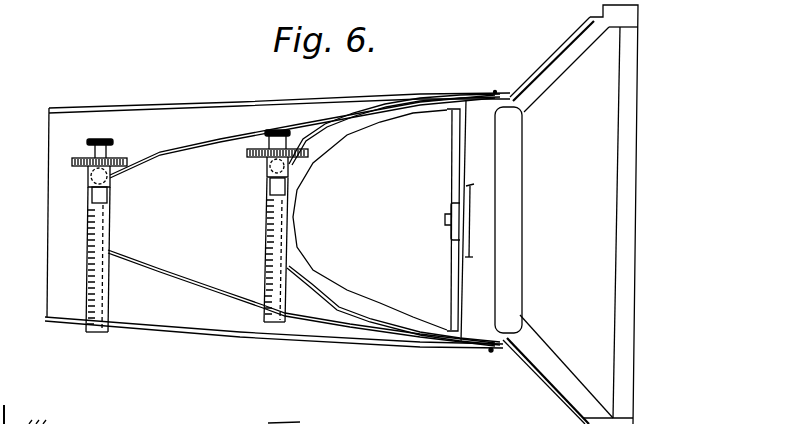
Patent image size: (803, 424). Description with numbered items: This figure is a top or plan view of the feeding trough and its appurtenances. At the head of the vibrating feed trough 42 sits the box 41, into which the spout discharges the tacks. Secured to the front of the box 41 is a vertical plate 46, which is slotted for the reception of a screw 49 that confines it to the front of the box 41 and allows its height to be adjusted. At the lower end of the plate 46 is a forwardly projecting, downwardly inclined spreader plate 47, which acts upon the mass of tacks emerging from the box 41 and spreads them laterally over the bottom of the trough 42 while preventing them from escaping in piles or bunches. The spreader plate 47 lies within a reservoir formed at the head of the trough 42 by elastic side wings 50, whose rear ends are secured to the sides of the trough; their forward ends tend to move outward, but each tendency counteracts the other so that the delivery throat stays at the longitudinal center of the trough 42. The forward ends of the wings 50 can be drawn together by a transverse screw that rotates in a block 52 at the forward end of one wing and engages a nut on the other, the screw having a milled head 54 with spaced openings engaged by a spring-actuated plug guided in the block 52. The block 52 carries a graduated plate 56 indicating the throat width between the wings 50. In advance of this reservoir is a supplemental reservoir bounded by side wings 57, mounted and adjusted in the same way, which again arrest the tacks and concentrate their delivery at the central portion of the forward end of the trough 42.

The box 41 is at (566, 214).
The feed trough 42 is at (277, 222).
The vertical plate 46 is at (458, 158).
The spreader plate 47 is at (372, 220).
The screw 49 is at (445, 226).
The elastic side wings 50 is at (325, 133).
The block 52 is at (88, 184).
The milled head 54 is at (83, 153).
The graduated plate 56 is at (86, 247).
The side wings 57 is at (204, 144).